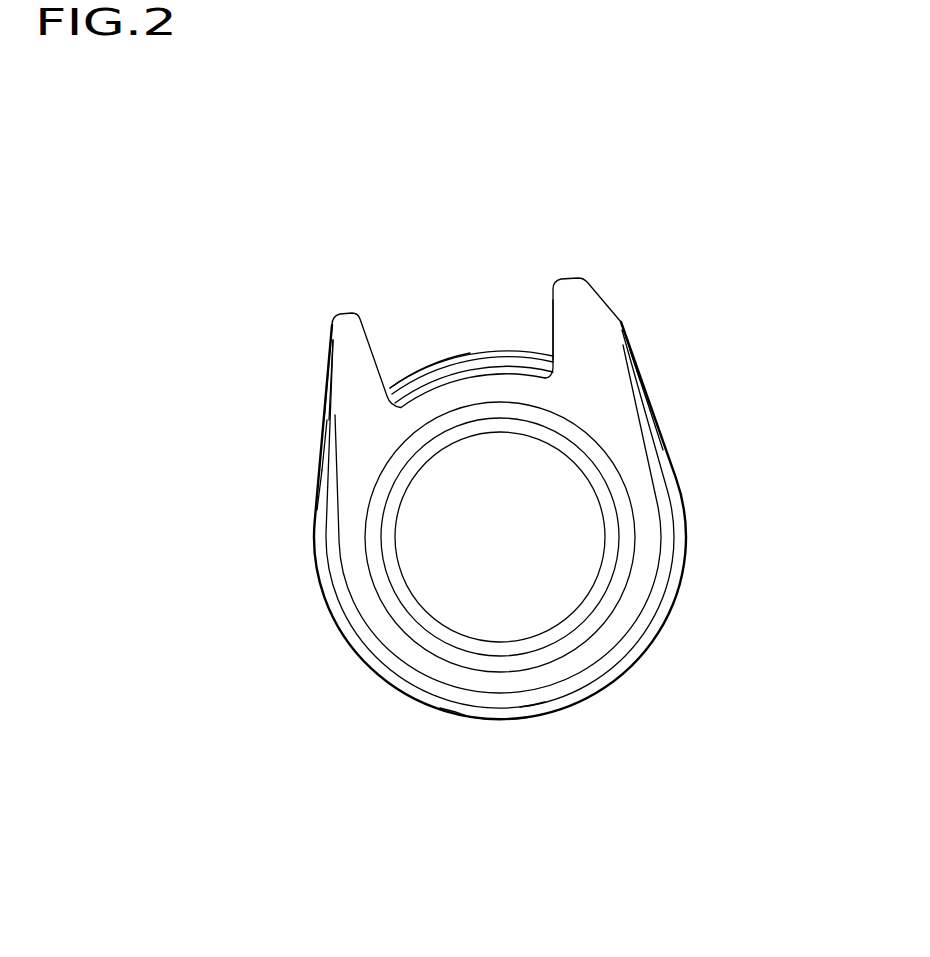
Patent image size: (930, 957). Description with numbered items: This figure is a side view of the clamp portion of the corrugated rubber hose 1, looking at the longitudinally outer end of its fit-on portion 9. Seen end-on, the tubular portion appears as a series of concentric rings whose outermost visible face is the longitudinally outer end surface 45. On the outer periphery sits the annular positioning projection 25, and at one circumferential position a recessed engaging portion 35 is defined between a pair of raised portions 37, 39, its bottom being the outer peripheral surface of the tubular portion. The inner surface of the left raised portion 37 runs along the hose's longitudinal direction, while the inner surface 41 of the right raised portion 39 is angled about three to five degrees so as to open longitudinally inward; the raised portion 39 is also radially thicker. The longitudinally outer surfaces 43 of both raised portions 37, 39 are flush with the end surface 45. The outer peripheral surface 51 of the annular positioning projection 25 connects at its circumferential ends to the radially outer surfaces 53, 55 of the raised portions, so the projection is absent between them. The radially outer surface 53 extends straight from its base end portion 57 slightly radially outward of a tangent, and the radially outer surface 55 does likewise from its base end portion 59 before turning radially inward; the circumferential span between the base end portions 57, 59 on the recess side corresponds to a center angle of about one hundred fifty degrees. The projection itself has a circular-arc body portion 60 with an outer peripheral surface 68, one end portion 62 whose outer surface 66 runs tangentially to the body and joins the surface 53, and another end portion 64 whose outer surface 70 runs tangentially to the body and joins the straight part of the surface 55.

The corrugated rubber hose 1 is at (343, 148).
The fit-on portion 9 is at (497, 280).
The annular positioning projection 25 is at (652, 651).
The recessed engaging portion 35 is at (452, 338).
The raised portion 37 is at (338, 315).
The raised portion 39 is at (570, 278).
The inner surface 41 is at (552, 325).
The longitudinally outer surfaces 43 is at (350, 365).
The longitudinally outer end surface 45 is at (646, 574).
The outer peripheral surface 51 is at (495, 720).
The radially outer surface 53 is at (332, 403).
The radially outer surface 55 is at (636, 387).
The base end portion 57 is at (340, 520).
The base end portion 59 is at (657, 494).
The body portion 60 is at (533, 710).
The one end portion 62 is at (322, 490).
The other end portion 64 is at (663, 452).
The outer surface 66 is at (325, 440).
The outer peripheral surface 68 is at (443, 712).
The outer surface 70 is at (655, 410).